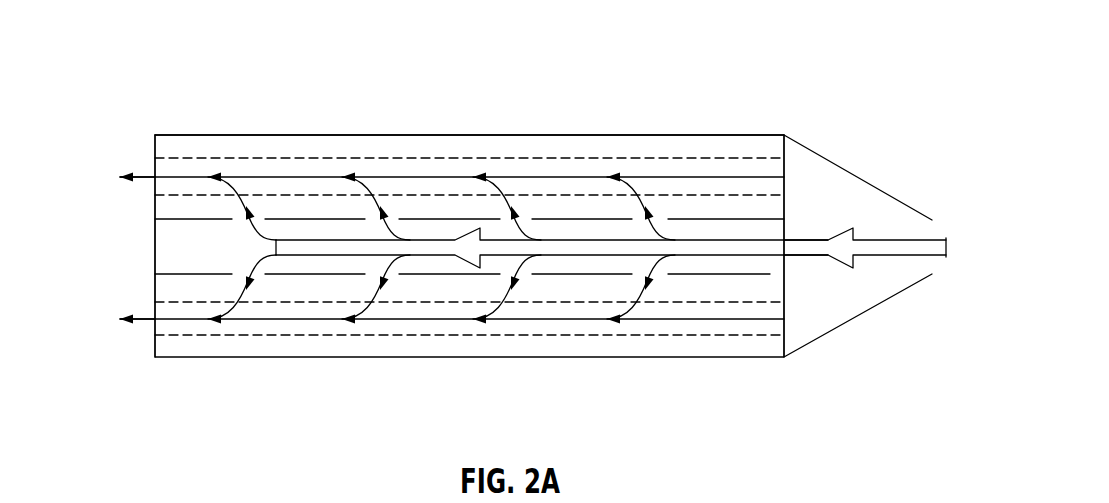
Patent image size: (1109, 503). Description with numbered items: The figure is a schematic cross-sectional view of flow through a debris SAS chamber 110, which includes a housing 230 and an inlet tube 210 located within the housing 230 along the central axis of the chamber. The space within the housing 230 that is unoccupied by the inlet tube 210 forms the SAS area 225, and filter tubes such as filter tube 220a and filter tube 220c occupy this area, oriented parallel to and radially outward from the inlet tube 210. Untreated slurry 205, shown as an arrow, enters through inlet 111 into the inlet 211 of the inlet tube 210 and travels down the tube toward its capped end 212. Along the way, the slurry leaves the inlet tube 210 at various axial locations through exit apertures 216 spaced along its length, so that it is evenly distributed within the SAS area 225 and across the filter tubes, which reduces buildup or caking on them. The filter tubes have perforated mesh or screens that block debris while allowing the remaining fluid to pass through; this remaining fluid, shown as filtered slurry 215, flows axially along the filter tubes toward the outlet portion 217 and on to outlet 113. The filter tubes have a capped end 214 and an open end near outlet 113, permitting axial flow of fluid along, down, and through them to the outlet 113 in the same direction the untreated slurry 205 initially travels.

The debris SAS chamber 110 is at (150, 42).
The inlet 111 is at (944, 270).
The outlet 113 is at (89, 323).
The untreated slurry 205 is at (933, 238).
The inlet tube 210 is at (767, 276).
The inlet 211 is at (795, 265).
The capped end 212 is at (155, 245).
The capped end 214 is at (786, 178).
The filtered slurry 215 is at (626, 176).
The exit apertures 216 is at (245, 237).
The outlet portion 217 is at (164, 325).
The filter tube 220a is at (523, 158).
The filter tube 220c is at (602, 337).
The SAS area 225 is at (331, 204).
The housing 230 is at (421, 135).